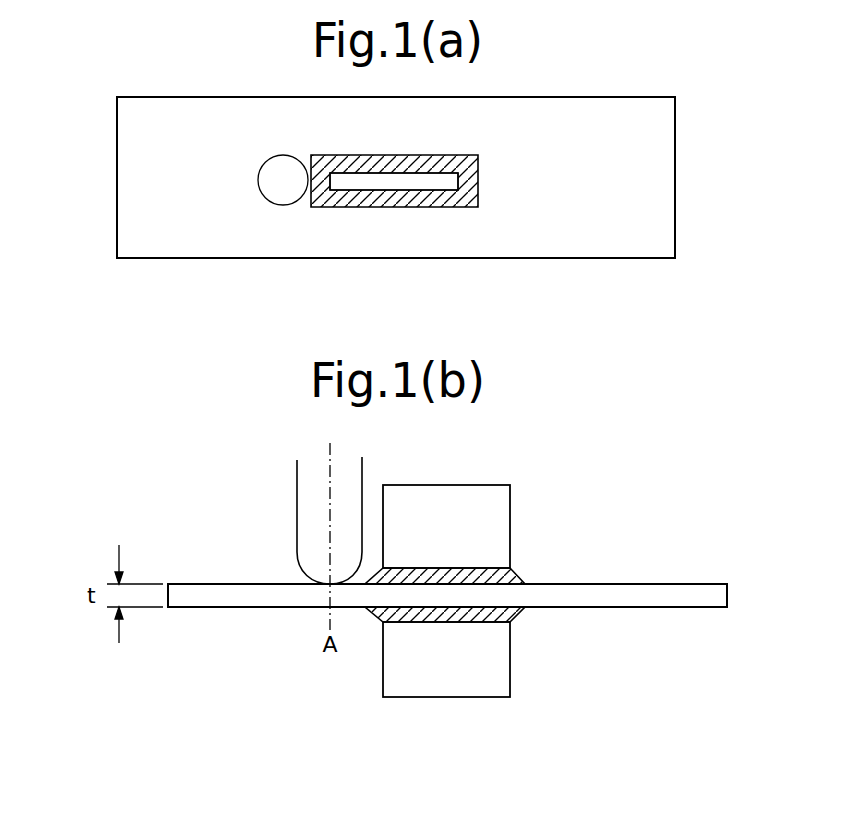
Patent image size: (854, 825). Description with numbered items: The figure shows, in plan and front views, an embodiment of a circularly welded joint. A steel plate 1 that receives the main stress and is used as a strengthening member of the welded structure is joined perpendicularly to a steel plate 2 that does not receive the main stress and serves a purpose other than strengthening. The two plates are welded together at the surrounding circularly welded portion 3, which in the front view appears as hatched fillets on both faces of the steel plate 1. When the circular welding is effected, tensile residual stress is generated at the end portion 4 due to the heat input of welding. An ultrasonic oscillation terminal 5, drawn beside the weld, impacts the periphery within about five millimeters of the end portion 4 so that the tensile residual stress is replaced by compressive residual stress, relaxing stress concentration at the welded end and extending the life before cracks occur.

In FIG. 1A, the steel plate 1 is at (135, 218).
In FIG. 1B, the steel plate 1 is at (223, 592).
In FIG. 1A, the steel plate 2 is at (413, 178).
In FIG. 1B, the steel plate 2 is at (485, 497).
In FIG. 1A, the circularly welded portion 3 is at (470, 182).
In FIG. 1B, the circularly welded portion 3 is at (507, 578).
In FIG. 1B, the end portion 4 is at (360, 608).
In FIG. 1A, the ultrasonic oscillation terminal 5 is at (272, 177).
In FIG. 1B, the ultrasonic oscillation terminal 5 is at (297, 497).